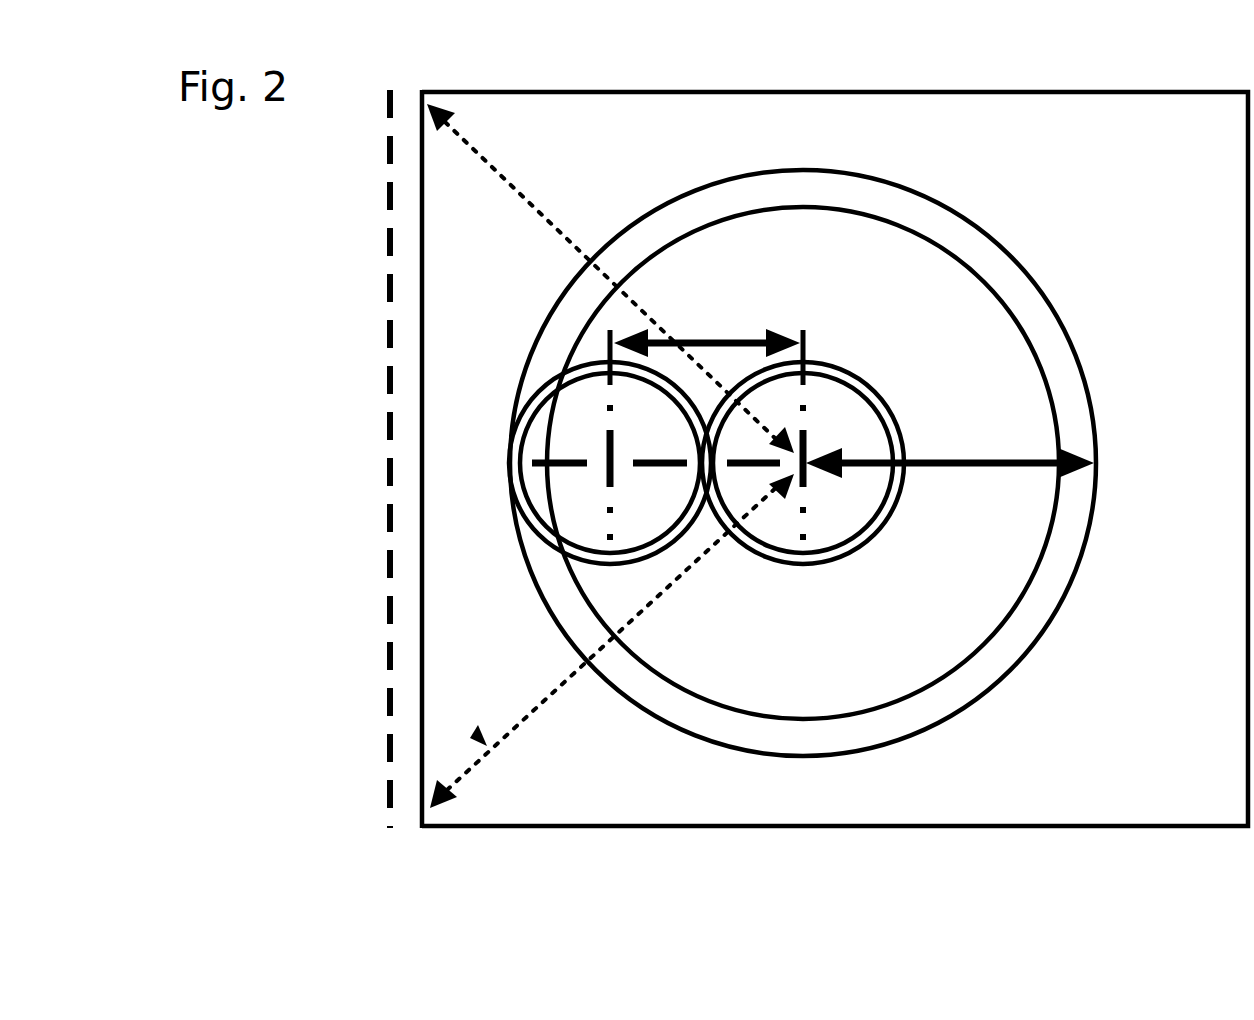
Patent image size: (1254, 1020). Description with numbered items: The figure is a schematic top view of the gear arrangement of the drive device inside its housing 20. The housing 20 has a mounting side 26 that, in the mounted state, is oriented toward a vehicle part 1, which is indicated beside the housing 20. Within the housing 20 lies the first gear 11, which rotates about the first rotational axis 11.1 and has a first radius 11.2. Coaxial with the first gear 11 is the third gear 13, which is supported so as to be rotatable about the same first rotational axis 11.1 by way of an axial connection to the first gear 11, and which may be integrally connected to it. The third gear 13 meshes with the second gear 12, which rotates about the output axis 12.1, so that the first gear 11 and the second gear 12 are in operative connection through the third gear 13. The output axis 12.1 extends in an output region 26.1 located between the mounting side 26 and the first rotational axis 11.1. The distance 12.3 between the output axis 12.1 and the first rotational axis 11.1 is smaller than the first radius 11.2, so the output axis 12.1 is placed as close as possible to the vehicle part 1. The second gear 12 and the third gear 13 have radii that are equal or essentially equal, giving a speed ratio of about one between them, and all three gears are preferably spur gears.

The vehicle part 1 is at (390, 598).
The first gear 11 is at (803, 240).
The first rotational axis 11.1 is at (810, 455).
The first radius 11.2 is at (1010, 458).
The second gear 12 is at (650, 500).
The output axis 12.1 is at (600, 435).
The distance 12.3 is at (718, 335).
The third gear 13 is at (845, 515).
The housing 20 is at (1076, 830).
The mounting side 26 is at (419, 687).
The output region 26.1 is at (480, 737).